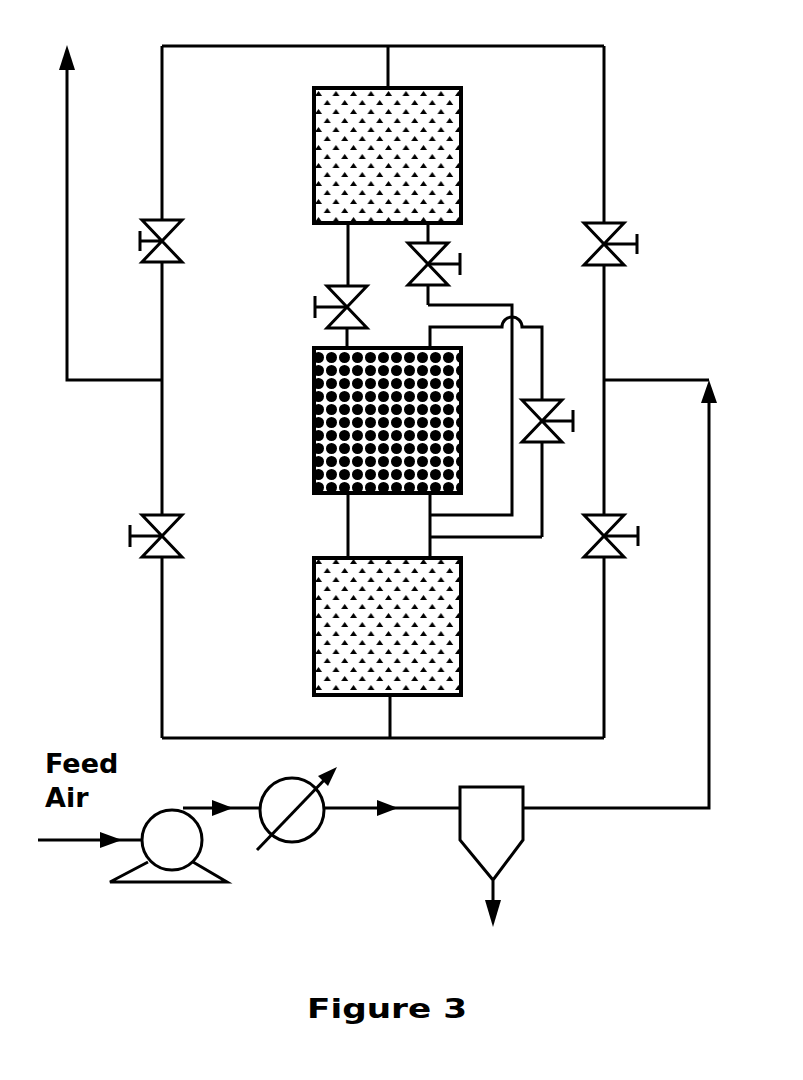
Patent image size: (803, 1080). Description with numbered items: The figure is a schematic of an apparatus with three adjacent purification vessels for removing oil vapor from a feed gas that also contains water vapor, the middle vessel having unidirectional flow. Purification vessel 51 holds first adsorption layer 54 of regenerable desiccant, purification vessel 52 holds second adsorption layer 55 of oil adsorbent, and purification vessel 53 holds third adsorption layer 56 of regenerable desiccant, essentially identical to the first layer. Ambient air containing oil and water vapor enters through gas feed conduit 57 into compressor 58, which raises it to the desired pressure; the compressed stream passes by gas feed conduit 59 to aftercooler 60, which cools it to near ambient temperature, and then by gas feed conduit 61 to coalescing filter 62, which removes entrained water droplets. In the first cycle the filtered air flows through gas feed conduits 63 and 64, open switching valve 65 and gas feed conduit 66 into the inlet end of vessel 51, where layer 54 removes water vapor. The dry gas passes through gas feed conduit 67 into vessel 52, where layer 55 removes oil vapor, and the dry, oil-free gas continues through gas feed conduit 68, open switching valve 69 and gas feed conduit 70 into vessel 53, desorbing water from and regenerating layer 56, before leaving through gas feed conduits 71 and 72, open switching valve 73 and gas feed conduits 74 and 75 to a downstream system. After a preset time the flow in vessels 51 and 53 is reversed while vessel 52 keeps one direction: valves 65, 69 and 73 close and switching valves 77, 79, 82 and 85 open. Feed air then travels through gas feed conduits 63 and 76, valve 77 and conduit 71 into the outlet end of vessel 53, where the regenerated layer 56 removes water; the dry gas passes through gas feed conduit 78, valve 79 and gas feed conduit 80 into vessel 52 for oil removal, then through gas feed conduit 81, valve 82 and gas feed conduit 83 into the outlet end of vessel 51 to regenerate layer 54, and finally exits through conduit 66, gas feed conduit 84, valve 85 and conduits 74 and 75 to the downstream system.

The purification vessel 51 is at (315, 622).
The purification vessel 52 is at (317, 410).
The purification vessel 53 is at (313, 192).
The first adsorption layer 54 is at (452, 612).
The second adsorption layer 55 is at (433, 393).
The third adsorption layer 56 is at (447, 173).
The gas feed conduit 57 is at (77, 843).
The compressor 58 is at (167, 883).
The gas feed conduit 59 is at (248, 810).
The aftercooler 60 is at (300, 842).
The gas feed conduit 61 is at (440, 805).
The coalescing filter 62 is at (503, 860).
The gas feed conduit 63 is at (717, 588).
The gas feed conduit 64 is at (603, 448).
The switching valve 65 is at (640, 530).
The gas feed conduit 66 is at (392, 727).
The gas feed conduit 67 is at (347, 520).
The gas feed conduit 68 is at (353, 337).
The switching valve 69 is at (313, 310).
The gas feed conduit 70 is at (348, 263).
The gas feed conduit 71 is at (390, 58).
The gas feed conduit 72 is at (162, 117).
The switching valve 73 is at (140, 243).
The gas feed conduit 74 is at (85, 378).
The gas feed conduit 75 is at (71, 38).
The gas feed conduit 76 is at (603, 325).
The switching valve 77 is at (637, 238).
The gas feed conduit 78 is at (430, 238).
The switching valve 79 is at (462, 267).
The gas feed conduit 80 is at (513, 307).
The gas feed conduit 81 is at (543, 342).
The switching valve 82 is at (552, 445).
The gas feed conduit 83 is at (482, 537).
The gas feed conduit 84 is at (160, 628).
The switching valve 85 is at (128, 533).